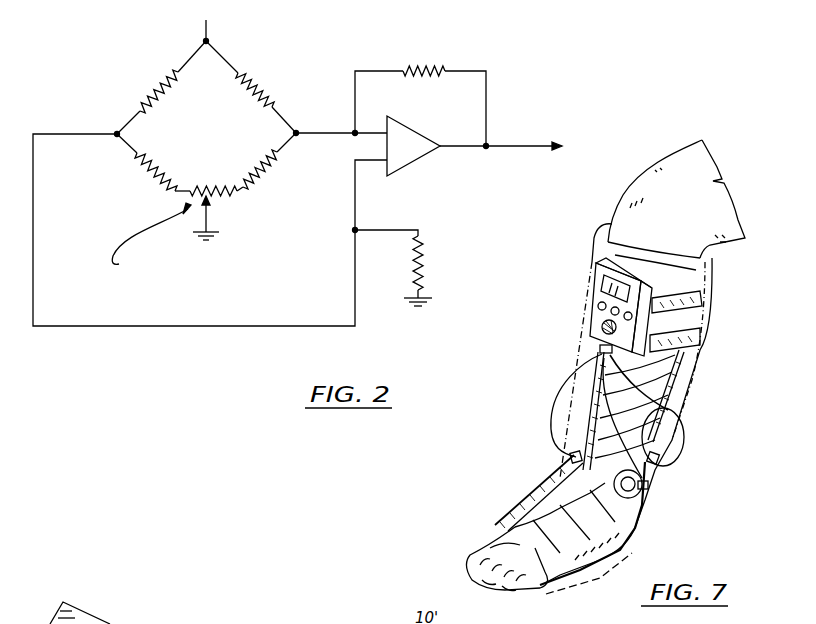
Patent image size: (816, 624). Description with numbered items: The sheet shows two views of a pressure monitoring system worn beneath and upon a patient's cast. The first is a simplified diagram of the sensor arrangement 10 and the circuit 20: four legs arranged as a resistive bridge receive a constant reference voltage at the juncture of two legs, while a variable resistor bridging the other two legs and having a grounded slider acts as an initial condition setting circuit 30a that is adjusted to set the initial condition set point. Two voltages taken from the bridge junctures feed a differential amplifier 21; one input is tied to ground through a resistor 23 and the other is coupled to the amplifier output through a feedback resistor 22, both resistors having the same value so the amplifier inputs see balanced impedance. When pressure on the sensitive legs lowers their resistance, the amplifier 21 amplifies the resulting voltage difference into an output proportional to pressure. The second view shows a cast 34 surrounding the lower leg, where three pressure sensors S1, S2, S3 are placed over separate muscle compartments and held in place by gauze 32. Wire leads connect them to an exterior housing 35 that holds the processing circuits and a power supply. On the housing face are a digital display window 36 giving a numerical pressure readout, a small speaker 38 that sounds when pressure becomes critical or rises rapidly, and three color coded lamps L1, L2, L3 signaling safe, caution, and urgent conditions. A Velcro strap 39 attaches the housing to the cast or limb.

In FIG. 2, the sensor arrangement 10 is at (191, 70).
In FIG. 2, the circuit 20 is at (284, 13).
In FIG. 2, the differential amplifier 21 is at (415, 160).
In FIG. 2, the feedback resistor 22 is at (441, 70).
In FIG. 2, the resistor 23 is at (425, 247).
In FIG. 2, the initial condition setting circuit 30a is at (222, 198).
In FIG. 7, the gauze 32 is at (632, 530).
In FIG. 7, the cast 34 is at (522, 497).
In FIG. 7, the exterior housing 35 is at (575, 316).
In FIG. 7, the digital display window 36 is at (596, 285).
In FIG. 7, the speaker 38 is at (694, 382).
In FIG. 7, the Velcro strap 39 is at (702, 324).
In FIG. 7, the sensor S1 is at (571, 458).
In FIG. 7, the sensor S2 is at (647, 494).
In FIG. 7, the sensor S3 is at (676, 464).
In FIG. 7, the lamp L1 is at (602, 306).
In FIG. 7, the lamp L2 is at (615, 311).
In FIG. 7, the lamp L3 is at (628, 316).